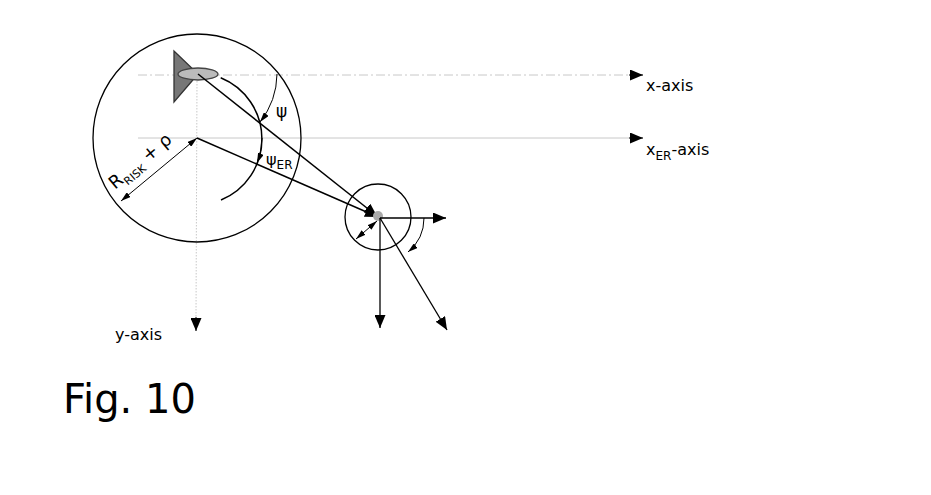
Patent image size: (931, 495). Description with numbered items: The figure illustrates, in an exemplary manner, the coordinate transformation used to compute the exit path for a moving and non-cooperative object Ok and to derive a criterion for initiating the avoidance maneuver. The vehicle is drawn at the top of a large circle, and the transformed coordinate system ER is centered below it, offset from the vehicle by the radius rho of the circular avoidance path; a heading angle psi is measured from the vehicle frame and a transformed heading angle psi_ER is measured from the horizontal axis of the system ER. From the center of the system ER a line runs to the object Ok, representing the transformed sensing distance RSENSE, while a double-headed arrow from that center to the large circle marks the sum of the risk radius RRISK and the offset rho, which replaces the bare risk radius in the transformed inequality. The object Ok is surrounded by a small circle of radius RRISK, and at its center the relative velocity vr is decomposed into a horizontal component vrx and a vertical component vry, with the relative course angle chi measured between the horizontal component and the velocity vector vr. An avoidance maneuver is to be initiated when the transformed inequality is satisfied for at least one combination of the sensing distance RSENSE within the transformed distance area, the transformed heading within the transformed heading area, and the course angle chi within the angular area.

The transformed coordinate system ER is at (221, 199).
The non-cooperative object Ok is at (378, 217).
The offset radius rho is at (230, 82).
The transformed sensing range R_SENSE,ER RSENSE is at (287, 182).
The risk radius R_RISK RRISK is at (366, 219).
The relative velocity x component vrx is at (425, 222).
The relative velocity y component vry is at (374, 280).
The relative velocity vr is at (420, 276).
The relative course angle chi_r chi is at (423, 244).